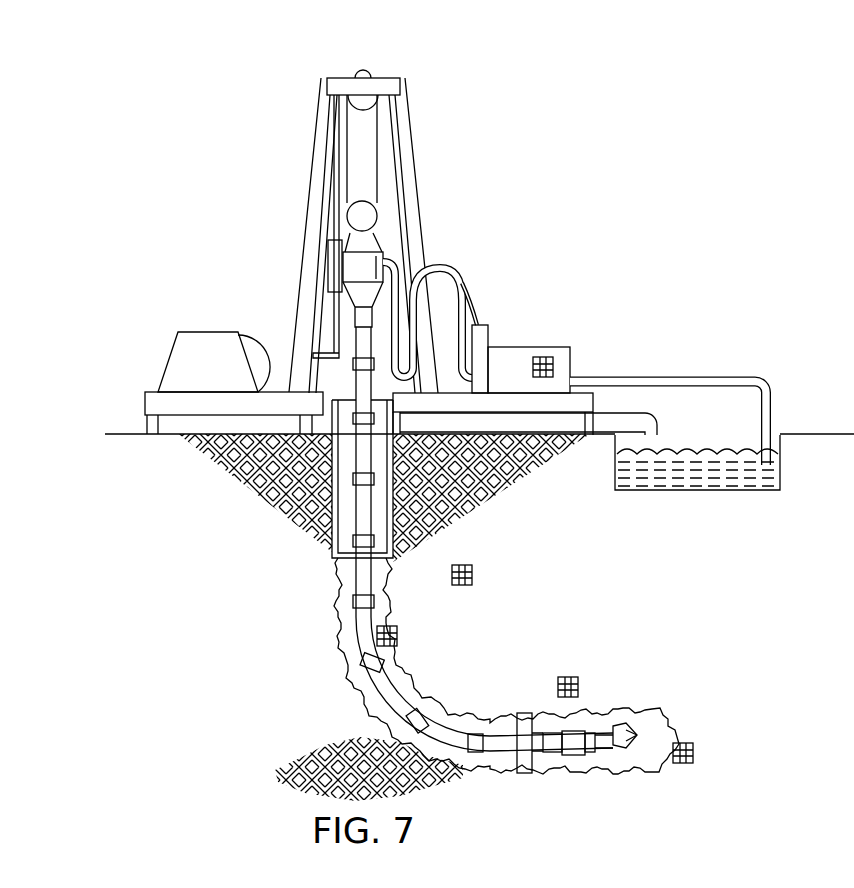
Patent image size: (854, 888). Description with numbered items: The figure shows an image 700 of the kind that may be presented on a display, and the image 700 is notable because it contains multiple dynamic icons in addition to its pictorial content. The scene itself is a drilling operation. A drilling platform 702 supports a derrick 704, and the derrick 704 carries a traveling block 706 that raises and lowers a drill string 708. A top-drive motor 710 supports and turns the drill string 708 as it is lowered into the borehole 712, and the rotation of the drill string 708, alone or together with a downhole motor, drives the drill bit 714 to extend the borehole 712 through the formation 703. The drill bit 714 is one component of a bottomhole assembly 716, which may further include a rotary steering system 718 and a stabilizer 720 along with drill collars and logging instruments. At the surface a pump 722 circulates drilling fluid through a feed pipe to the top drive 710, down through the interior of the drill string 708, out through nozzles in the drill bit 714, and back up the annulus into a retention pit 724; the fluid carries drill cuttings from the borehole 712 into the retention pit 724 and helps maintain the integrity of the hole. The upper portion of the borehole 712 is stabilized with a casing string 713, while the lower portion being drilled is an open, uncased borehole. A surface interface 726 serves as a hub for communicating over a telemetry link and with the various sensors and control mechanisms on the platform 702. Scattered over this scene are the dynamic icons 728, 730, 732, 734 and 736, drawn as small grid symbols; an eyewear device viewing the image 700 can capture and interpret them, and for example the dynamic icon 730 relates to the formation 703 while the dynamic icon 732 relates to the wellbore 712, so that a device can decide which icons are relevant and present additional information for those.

The image 700 is at (402, 52).
The drilling platform 702 is at (145, 401).
The formation 703 is at (218, 583).
The derrick 704 is at (313, 158).
The traveling block 706 is at (350, 212).
The drill string 708 is at (387, 702).
The top-drive motor 710 is at (343, 267).
The borehole 712 is at (337, 620).
The casing string 713 is at (332, 552).
The drill bit 714 is at (620, 720).
The bottomhole assembly 716 is at (533, 753).
The rotary steering system 718 is at (572, 757).
The stabilizer 720 is at (524, 713).
The pump 722 is at (572, 362).
The retention pit 724 is at (615, 477).
The surface interface 726 is at (505, 305).
The dynamic icon 728 is at (545, 357).
The dynamic icon 730 is at (462, 565).
The dynamic icon 732 is at (398, 628).
The dynamic icon 734 is at (570, 677).
The dynamic icon 736 is at (693, 753).